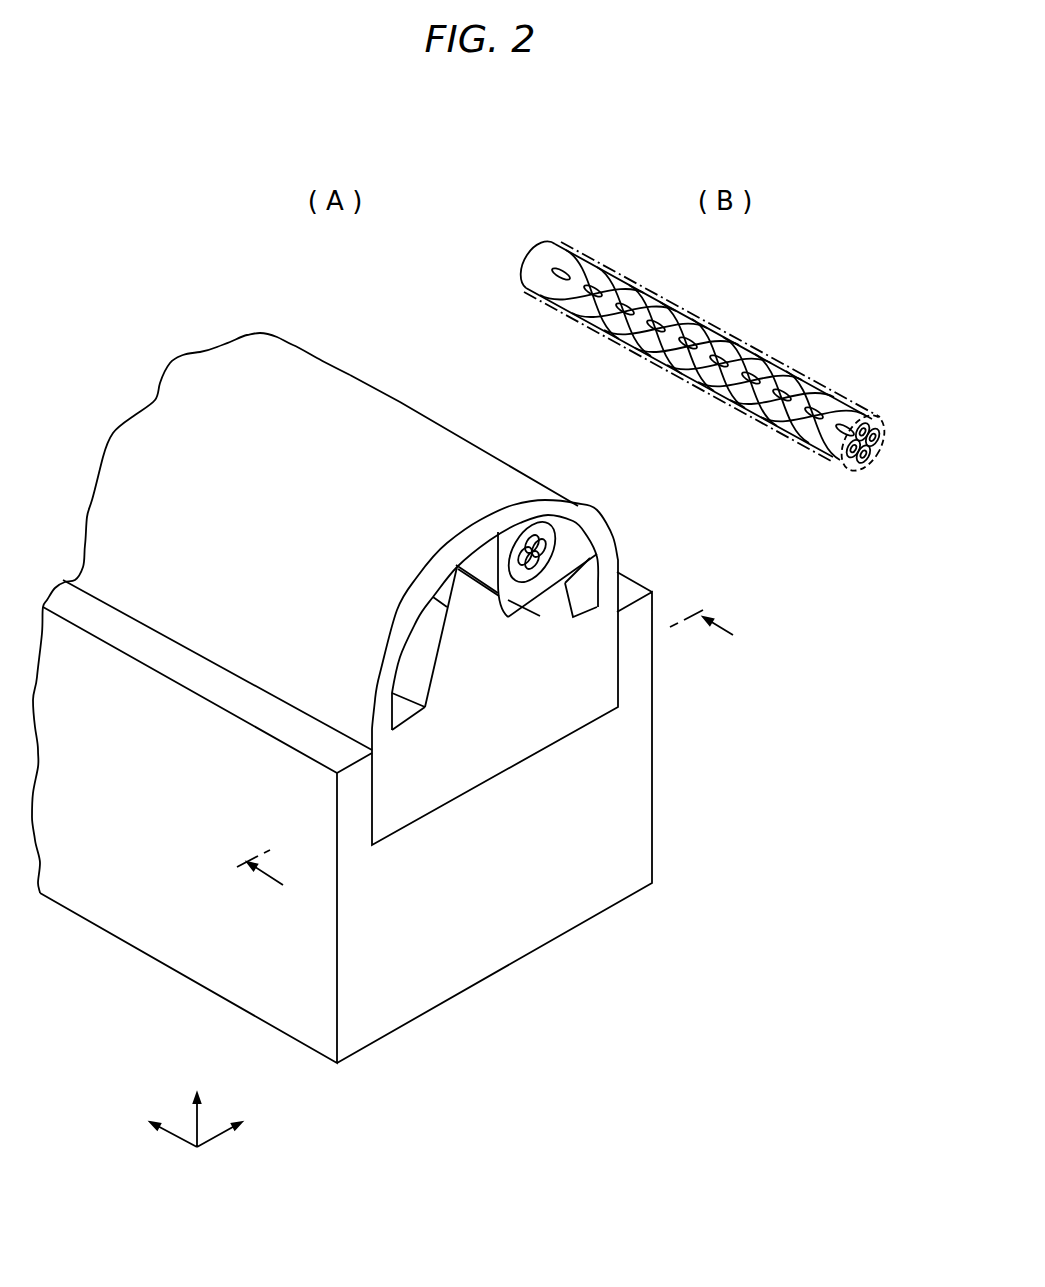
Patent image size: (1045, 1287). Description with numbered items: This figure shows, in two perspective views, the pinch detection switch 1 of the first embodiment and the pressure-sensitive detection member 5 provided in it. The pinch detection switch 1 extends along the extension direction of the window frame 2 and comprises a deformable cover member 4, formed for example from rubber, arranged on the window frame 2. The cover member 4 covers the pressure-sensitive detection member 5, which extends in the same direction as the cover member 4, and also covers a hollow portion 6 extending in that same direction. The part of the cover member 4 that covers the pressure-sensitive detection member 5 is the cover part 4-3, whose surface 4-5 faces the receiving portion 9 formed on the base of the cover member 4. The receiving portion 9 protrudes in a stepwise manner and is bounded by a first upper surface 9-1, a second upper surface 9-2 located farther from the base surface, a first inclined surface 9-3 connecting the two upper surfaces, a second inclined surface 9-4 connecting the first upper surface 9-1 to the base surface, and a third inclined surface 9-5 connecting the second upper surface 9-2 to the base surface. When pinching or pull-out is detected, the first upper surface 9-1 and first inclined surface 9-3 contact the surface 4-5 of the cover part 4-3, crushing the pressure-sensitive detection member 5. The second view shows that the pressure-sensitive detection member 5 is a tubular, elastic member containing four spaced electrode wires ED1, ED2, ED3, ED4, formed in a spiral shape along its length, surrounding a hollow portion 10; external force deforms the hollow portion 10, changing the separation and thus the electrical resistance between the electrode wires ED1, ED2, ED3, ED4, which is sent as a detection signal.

The pinch detection switch 1 is at (553, 440).
The window frame 2 is at (632, 866).
The cover member 4 is at (618, 563).
The cover part 4-3 is at (518, 603).
The surface of the cover part 4-5 is at (508, 617).
The pressure-sensitive detection member 5 is at (550, 525).
The hollow portion 6 is at (398, 708).
The receiving portion 9 is at (534, 581).
The first upper surface 9-1 is at (503, 606).
The second upper surface 9-2 is at (456, 588).
The first inclined surface 9-3 is at (491, 586).
The second inclined surface 9-4 is at (580, 609).
The third inclined surface 9-5 is at (422, 658).
The hollow portion 10 is at (548, 547).
The electrode wire ED1 is at (867, 420).
The electrode wire ED2 is at (878, 431).
The electrode wire ED3 is at (864, 473).
The electrode wire ED4 is at (843, 463).